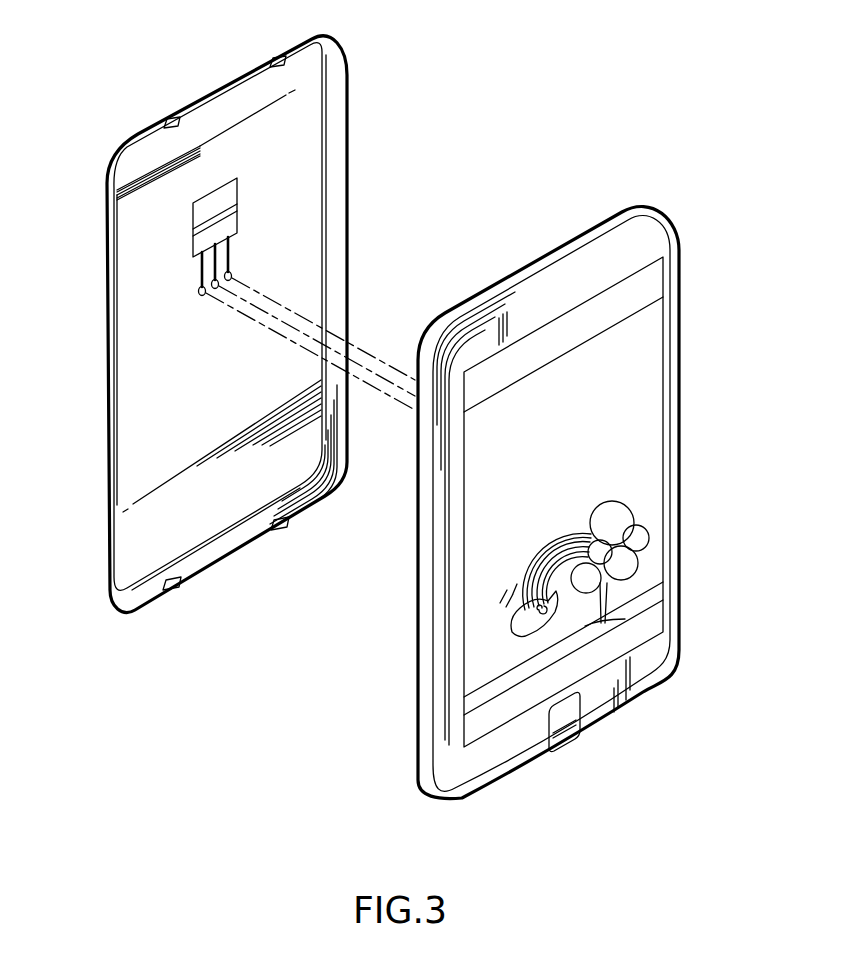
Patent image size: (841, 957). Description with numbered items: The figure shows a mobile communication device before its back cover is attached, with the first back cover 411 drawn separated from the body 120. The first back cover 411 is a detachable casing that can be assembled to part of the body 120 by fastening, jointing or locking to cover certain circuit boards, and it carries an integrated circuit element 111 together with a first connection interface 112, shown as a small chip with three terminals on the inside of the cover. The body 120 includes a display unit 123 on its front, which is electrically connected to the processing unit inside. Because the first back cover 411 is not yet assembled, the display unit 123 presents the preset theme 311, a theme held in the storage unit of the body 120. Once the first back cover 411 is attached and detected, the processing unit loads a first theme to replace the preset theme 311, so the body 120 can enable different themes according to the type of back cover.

The first back cover 411 is at (257, 68).
The integrated circuit (IC) element 111 is at (215, 214).
The first connection interface 112 is at (198, 291).
The body 120 is at (531, 274).
The display unit 123 is at (633, 377).
The preset theme 311 is at (612, 590).